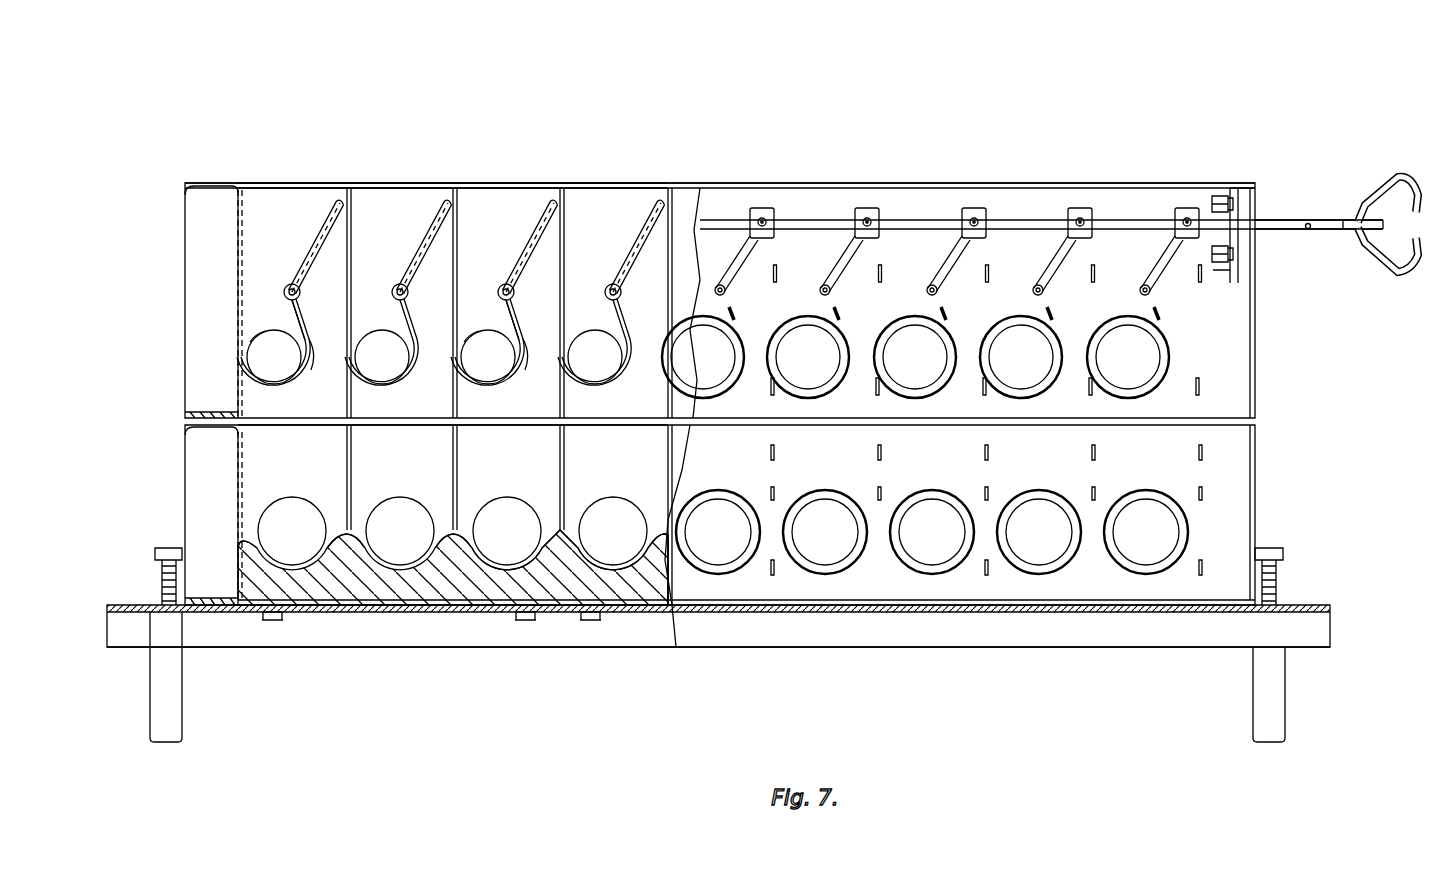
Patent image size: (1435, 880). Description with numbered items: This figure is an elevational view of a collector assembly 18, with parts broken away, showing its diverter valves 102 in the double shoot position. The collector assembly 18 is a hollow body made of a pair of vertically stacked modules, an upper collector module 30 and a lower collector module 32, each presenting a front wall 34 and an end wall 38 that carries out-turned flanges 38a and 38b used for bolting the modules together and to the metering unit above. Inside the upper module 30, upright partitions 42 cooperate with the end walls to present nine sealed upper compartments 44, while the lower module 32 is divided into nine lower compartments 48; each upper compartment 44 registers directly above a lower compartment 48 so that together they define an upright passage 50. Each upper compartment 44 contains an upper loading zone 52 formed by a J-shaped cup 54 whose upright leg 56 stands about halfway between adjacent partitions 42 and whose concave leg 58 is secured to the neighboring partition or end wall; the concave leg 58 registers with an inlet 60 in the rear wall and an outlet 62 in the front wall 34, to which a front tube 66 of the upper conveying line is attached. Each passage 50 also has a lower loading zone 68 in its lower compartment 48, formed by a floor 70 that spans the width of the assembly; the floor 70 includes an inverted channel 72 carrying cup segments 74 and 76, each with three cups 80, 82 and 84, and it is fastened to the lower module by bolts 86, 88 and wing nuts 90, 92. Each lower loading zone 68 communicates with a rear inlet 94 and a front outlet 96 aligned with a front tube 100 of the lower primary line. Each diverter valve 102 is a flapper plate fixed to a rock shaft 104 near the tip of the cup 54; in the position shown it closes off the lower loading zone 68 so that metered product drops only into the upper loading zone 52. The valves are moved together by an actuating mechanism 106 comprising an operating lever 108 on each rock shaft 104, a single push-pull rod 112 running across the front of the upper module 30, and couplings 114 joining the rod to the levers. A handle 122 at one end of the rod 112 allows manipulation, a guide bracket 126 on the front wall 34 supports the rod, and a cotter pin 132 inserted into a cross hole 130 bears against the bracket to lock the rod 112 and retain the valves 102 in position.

The collector assembly 18 is at (1022, 103).
The upper collector module 30 is at (1270, 338).
The lower collector module 32 is at (1265, 483).
The front wall 34 is at (1245, 388).
The end wall 38 is at (236, 232).
The out-turned flange 38a is at (238, 190).
The out-turned flange 38b is at (215, 418).
The partition 42 is at (345, 380).
The upper compartment 44 is at (313, 192).
The lower compartment 48 is at (305, 450).
The upright passage 50 is at (255, 175).
The upper loading zone 52 is at (250, 330).
The J-shaped cup 54 is at (315, 335).
The upright leg 56 is at (300, 313).
The concave leg 58 is at (286, 385).
The inlet 60 is at (247, 351).
The outlet 62 is at (828, 370).
The front tube 66 is at (845, 322).
The lower loading zone 68 is at (255, 513).
The floor 70 is at (1338, 622).
The inverted channel 72 is at (945, 632).
The cup segment 74 is at (400, 595).
The cup segment 76 is at (648, 600).
The cup 80 is at (338, 528).
The cup 82 is at (445, 527).
The cup 84 is at (555, 530).
The bolt 86 is at (158, 550).
The bolt 88 is at (1285, 556).
The wing nut 90 is at (172, 722).
The wing nut 92 is at (1268, 724).
The rear inlet 94 is at (288, 500).
The front outlet 96 is at (860, 548).
The front tube 100 is at (843, 495).
The diverter valve 102 is at (325, 225).
The rock shaft 104 is at (288, 283).
The actuating mechanism 106 is at (1316, 262).
The operating lever 108 is at (738, 278).
The push-pull rod 112 is at (1048, 220).
The coupling 114 is at (757, 210).
The handle 122 is at (1413, 188).
The guide bracket 126 is at (1234, 192).
The cross hole 130 is at (1310, 222).
The cotter pin 132 is at (1240, 255).